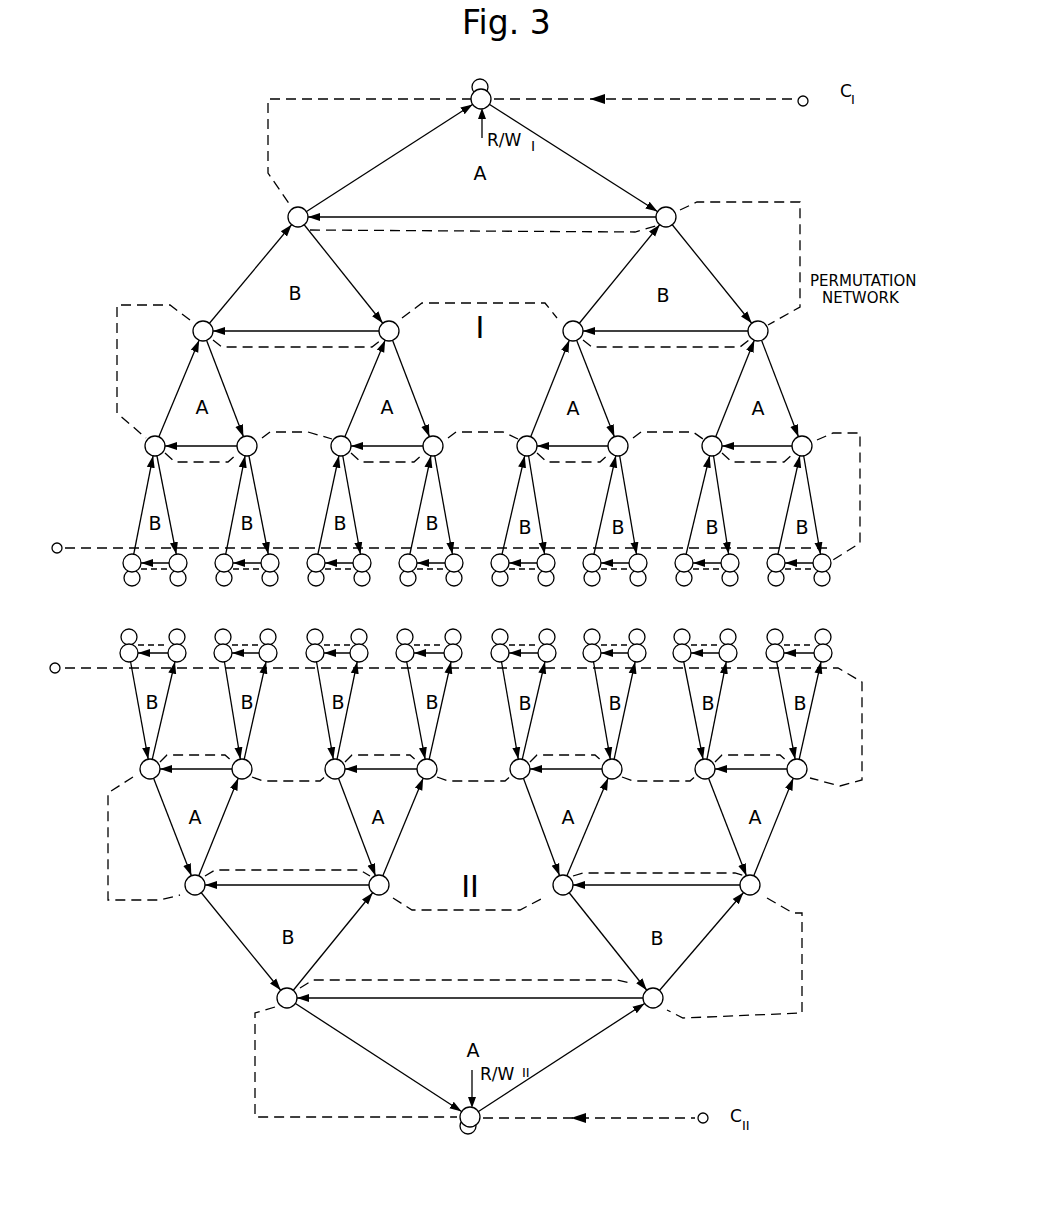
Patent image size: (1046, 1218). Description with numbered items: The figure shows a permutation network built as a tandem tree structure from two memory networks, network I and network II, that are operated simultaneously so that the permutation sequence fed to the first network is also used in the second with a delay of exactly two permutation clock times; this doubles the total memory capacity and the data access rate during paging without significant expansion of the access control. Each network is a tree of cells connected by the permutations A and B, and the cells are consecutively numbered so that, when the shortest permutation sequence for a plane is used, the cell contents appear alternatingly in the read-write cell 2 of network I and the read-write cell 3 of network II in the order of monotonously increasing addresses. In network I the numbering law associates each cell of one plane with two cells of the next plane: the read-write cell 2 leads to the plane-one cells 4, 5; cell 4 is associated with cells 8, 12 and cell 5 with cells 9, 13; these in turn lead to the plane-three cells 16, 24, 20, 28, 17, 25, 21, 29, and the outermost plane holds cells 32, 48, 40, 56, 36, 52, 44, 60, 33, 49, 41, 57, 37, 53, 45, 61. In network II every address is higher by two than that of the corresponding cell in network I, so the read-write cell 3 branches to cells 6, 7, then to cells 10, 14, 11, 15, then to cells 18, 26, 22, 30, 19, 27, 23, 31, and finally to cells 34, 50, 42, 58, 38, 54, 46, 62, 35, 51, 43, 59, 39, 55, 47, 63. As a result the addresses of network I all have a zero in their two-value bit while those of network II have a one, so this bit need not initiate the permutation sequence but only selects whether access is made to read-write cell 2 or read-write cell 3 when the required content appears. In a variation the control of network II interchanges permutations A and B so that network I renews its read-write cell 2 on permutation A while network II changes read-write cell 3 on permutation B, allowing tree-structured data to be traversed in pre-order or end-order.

The read-write cell 2 is at (490, 91).
The read-write cell 3 is at (479, 1123).
The cell 4 is at (298, 203).
The cell 5 is at (666, 203).
The cell 6 is at (287, 1010).
The cell 7 is at (653, 1012).
The cell 8 is at (203, 317).
The cell 9 is at (573, 317).
The cell 10 is at (191, 897).
The cell 11 is at (559, 898).
The cell 12 is at (391, 317).
The cell 13 is at (761, 317).
The cell 14 is at (381, 897).
The cell 15 is at (752, 899).
The cell 16 is at (151, 430).
The cell 17 is at (523, 431).
The cell 18 is at (145, 781).
The cell 19 is at (516, 782).
The cell 20 is at (338, 431).
The cell 21 is at (710, 432).
The cell 22 is at (330, 781).
The cell 23 is at (700, 782).
The cell 24 is at (253, 431).
The cell 25 is at (624, 432).
The cell 26 is at (247, 781).
The cell 27 is at (617, 782).
The cell 28 is at (441, 431).
The cell 29 is at (806, 432).
The cell 30 is at (431, 781).
The cell 31 is at (802, 782).
The cell 32 is at (126, 554).
The cell 33 is at (499, 553).
The cell 34 is at (126, 662).
The cell 35 is at (500, 662).
The cell 36 is at (315, 553).
The cell 37 is at (683, 553).
The cell 38 is at (315, 662).
The cell 39 is at (682, 662).
The cell 40 is at (223, 553).
The cell 41 is at (591, 553).
The cell 42 is at (223, 662).
The cell 43 is at (592, 662).
The cell 44 is at (407, 553).
The cell 45 is at (775, 553).
The cell 46 is at (405, 662).
The cell 47 is at (775, 662).
The cell 48 is at (180, 554).
The cell 49 is at (548, 554).
The cell 50 is at (178, 662).
The cell 51 is at (547, 662).
The cell 52 is at (364, 554).
The cell 53 is at (732, 554).
The cell 54 is at (360, 662).
The cell 55 is at (729, 662).
The cell 56 is at (273, 554).
The cell 57 is at (640, 554).
The cell 58 is at (269, 662).
The cell 59 is at (638, 662).
The cell 60 is at (455, 554).
The cell 61 is at (826, 554).
The cell 62 is at (453, 662).
The cell 63 is at (826, 662).